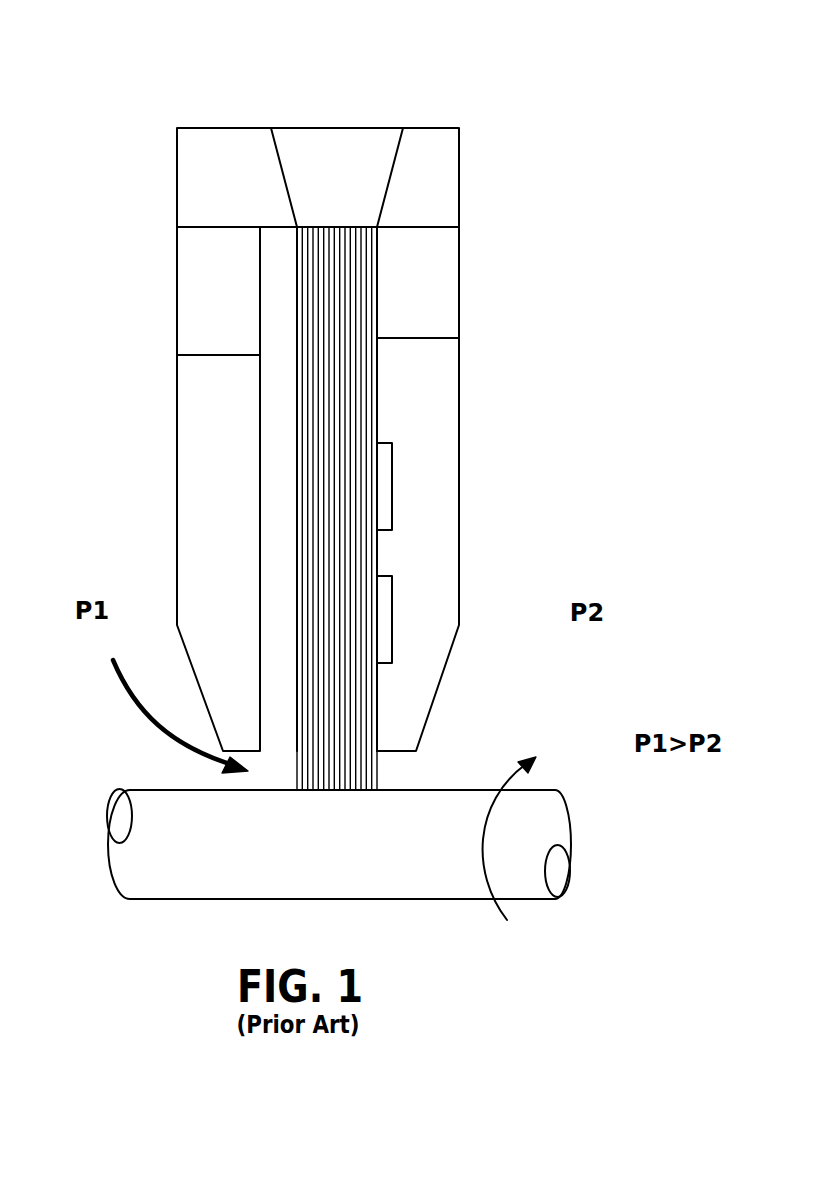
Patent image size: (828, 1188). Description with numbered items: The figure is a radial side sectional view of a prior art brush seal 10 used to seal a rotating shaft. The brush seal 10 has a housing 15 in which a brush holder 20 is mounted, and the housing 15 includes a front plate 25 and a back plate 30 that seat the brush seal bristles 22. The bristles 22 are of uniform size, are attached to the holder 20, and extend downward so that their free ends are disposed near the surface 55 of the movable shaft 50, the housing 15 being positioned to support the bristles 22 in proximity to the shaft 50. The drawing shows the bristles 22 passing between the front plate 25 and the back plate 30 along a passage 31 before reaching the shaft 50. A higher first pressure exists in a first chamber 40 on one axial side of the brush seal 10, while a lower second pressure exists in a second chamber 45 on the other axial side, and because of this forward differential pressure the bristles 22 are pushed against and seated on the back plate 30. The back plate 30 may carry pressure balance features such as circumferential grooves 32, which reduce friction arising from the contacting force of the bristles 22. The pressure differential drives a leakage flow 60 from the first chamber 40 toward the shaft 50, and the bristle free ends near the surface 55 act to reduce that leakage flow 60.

The brush seal 10 is at (512, 95).
The housing 15 is at (463, 209).
The brush holder 20 is at (366, 127).
The brush seal bristles 22 is at (355, 769).
The front plate 25 is at (208, 537).
The back plate 30 is at (447, 460).
The fiber passage 31 is at (378, 410).
The circumferential grooves 32 is at (383, 507).
The first chamber 40 is at (43, 494).
The second chamber 45 is at (660, 494).
The movable shaft 50 is at (438, 899).
The surface 55 is at (410, 805).
The leakage flow 60 is at (140, 720).